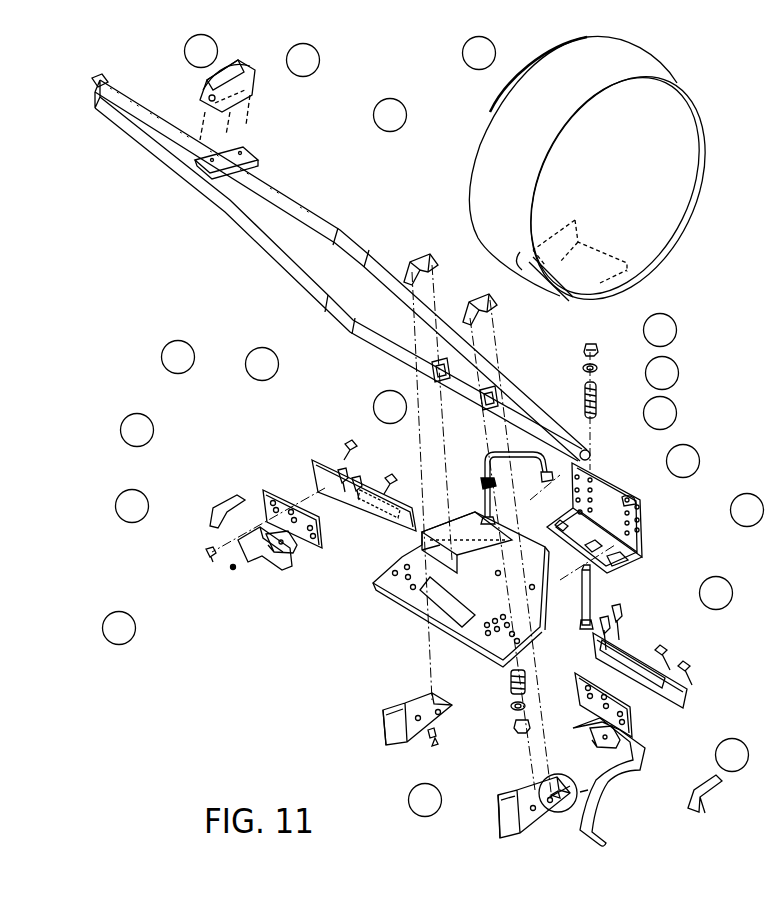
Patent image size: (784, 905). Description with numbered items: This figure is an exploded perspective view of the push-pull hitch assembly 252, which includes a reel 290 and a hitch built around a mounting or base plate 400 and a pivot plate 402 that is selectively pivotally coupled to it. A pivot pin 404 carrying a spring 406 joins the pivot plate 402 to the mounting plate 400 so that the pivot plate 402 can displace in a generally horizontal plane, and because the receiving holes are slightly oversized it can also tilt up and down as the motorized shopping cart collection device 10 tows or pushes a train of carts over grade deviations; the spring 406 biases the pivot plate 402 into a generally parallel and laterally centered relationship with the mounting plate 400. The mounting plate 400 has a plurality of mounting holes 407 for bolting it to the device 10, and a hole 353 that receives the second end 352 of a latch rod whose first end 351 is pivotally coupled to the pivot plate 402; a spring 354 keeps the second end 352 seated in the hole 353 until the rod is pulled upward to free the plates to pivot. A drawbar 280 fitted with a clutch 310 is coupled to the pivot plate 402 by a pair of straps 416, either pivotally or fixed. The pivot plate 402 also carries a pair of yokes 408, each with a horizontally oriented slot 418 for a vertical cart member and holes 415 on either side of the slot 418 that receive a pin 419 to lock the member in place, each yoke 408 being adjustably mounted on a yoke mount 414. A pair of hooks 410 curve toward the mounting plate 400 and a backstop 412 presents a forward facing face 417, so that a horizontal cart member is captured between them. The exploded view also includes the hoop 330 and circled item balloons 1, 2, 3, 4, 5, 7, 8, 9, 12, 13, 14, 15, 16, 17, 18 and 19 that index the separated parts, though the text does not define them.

The drawbar 280 is at (334, 212).
The clutch 310 is at (237, 64).
The push-pull hitch assembly 252 is at (409, 45).
The reel 290 is at (640, 72).
The straps 416 is at (412, 255).
The backstop 412 is at (454, 407).
The U-shaped rod 330 is at (514, 464).
The first end 351 is at (460, 462).
The second end 352 is at (552, 481).
The spring 406 is at (602, 389).
The mounting plate 400 is at (646, 538).
The mounting holes 407 is at (638, 499).
The hole 353 is at (628, 562).
The pivot pin 404 is at (598, 603).
The yoke mounts 414 is at (690, 685).
The yokes 408 is at (305, 560).
The holes 415 is at (276, 555).
The slot 418 is at (305, 570).
The pin 419 is at (210, 505).
The forward facing face 417 is at (443, 573).
The pivot plate 402 is at (478, 652).
The spring 354 is at (528, 675).
The hooks 410 is at (400, 742).
The item 1 balloon 1 is at (185, 51).
The item 2 balloon 2 is at (463, 53).
The item 3 balloon 3 is at (287, 60).
The item 4 balloon 4 is at (556, 459).
The item 5 balloon 5 is at (648, 514).
The item 7 balloon 7 is at (121, 430).
The item 8 balloon 8 is at (374, 407).
The item 9 balloon 9 is at (374, 115).
The motorized shopping cart collection device 10 is at (370, 584).
The item 12 plate 12 is at (162, 357).
The item 13 bolts 13 is at (246, 364).
The item 14 balloon 14 is at (598, 593).
The item 15 bolt 15 is at (116, 506).
The item 16 balloon 16 is at (600, 347).
The item 17 balloon 17 is at (600, 369).
The item 18 balloon 18 is at (604, 407).
The item 19 balloon 19 is at (508, 690).